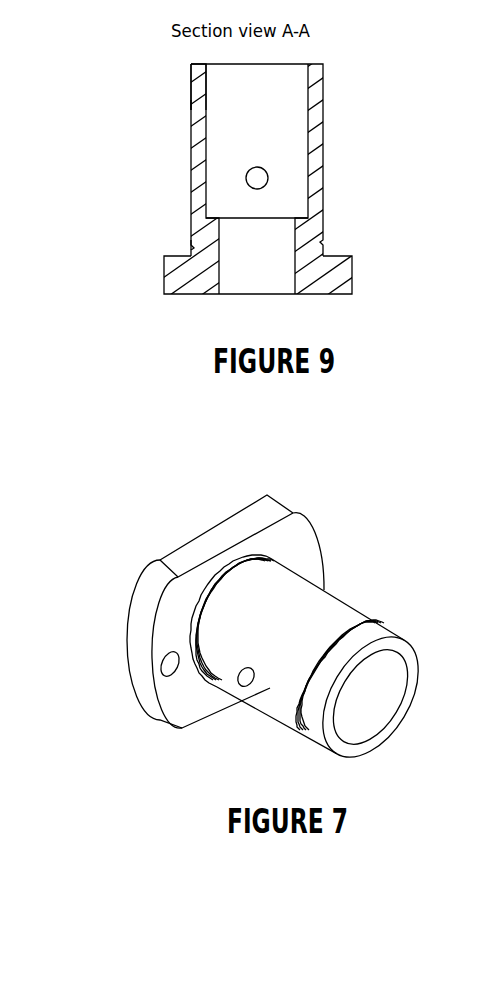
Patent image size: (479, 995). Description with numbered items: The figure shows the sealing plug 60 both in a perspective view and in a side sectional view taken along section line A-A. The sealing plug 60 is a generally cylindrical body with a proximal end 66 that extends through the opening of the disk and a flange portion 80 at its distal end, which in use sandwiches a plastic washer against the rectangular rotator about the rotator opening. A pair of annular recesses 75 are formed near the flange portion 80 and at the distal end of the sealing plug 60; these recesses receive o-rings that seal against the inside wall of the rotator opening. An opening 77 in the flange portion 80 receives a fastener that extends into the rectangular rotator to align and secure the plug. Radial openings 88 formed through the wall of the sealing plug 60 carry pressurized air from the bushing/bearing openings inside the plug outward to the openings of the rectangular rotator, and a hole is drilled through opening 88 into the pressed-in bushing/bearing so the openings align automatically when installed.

In FIG. 9, the sealing plug 60 is at (326, 78).
In FIG. 7, the sealing plug 60 is at (147, 577).
In FIG. 9, the proximal end 66 is at (190, 82).
In FIG. 7, the proximal end 66 is at (415, 652).
In FIG. 9, the annular recesses 75 is at (190, 105).
In FIG. 7, the annular recesses 75 is at (275, 565).
In FIG. 7, the opening 77 is at (162, 652).
In FIG. 9, the flange portion 80 is at (165, 272).
In FIG. 7, the flange portion 80 is at (187, 695).
In FIG. 9, the radial openings 88 is at (267, 173).
In FIG. 7, the radial openings 88 is at (245, 687).